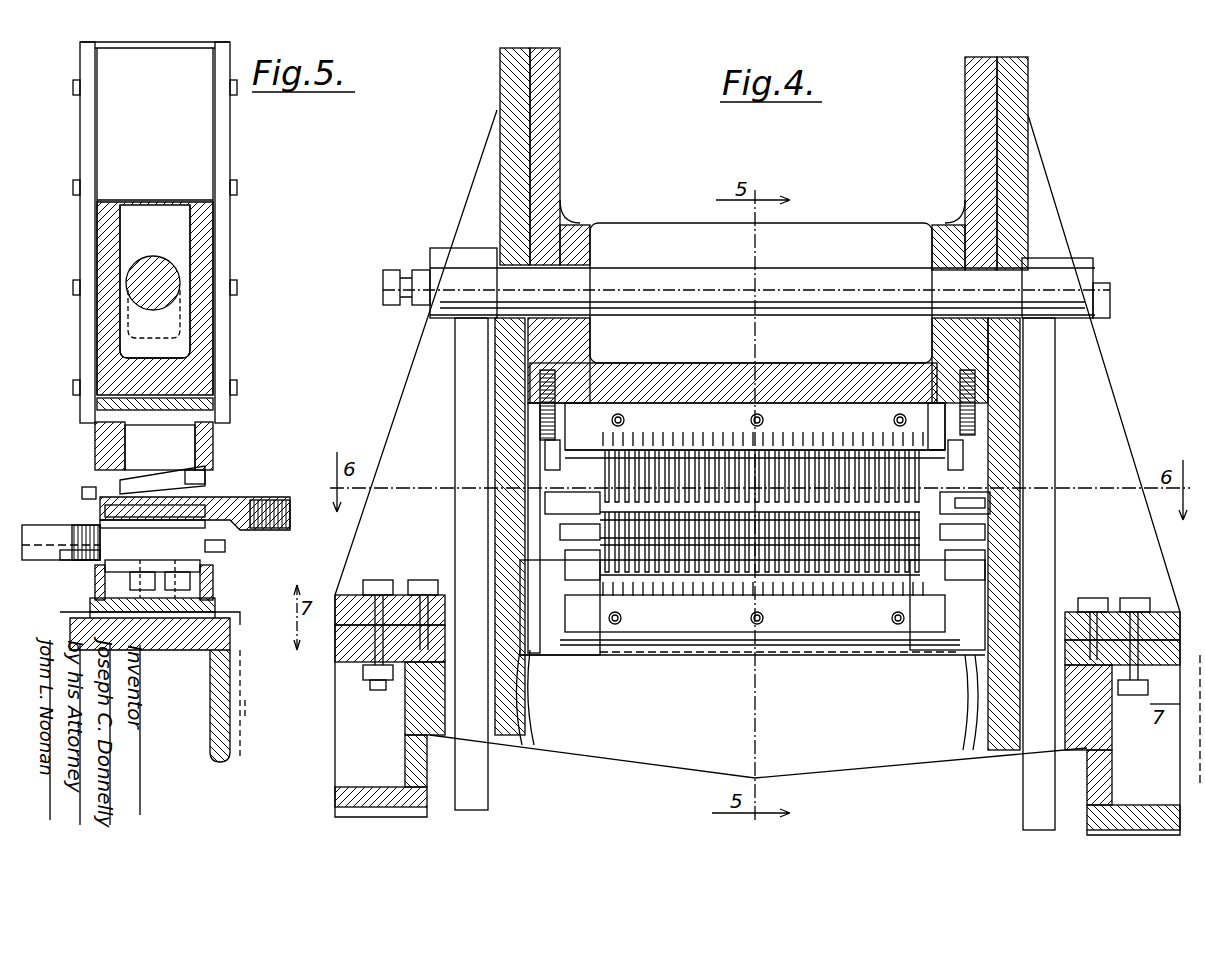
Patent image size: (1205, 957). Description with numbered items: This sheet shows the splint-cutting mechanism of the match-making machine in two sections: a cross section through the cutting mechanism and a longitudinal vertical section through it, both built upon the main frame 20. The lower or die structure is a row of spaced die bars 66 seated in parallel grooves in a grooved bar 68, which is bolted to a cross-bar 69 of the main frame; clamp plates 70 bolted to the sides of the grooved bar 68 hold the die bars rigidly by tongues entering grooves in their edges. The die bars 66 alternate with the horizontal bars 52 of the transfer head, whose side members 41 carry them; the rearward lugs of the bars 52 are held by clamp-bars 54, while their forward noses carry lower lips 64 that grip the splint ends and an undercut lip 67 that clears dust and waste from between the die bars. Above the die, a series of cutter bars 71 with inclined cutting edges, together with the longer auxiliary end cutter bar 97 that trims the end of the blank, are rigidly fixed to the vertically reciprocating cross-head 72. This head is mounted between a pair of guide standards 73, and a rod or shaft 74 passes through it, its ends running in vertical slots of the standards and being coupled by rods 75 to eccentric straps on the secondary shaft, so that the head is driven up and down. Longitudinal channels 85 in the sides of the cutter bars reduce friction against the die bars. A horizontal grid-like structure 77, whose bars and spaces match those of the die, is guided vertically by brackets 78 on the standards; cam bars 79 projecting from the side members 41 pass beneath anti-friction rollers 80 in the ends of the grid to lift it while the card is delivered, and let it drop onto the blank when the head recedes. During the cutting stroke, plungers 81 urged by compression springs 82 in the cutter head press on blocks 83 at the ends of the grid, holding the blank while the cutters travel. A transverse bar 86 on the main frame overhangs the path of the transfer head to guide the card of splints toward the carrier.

In FIG. 4, the main frame 20 is at (757, 707).
In FIG. 5, the main frame 20 is at (246, 700).
In FIG. 4, the side members 41 is at (565, 558).
In FIG. 5, the side members 41 is at (78, 560).
In FIG. 5, the horizontal bars 52 is at (61, 542).
In FIG. 4, the clamp-bars 54 is at (668, 580).
In FIG. 4, the lips 64 is at (742, 580).
In FIG. 4, the die bars 66 is at (572, 585).
In FIG. 5, the die bars 66 is at (285, 533).
In FIG. 4, the undercut lip 67 is at (822, 585).
In FIG. 5, the undercut lip 67 is at (152, 579).
In FIG. 5, the grooved bar 68 is at (200, 612).
In FIG. 4, the cross-bar 69 is at (840, 765).
In FIG. 5, the cross-bar 69 is at (245, 645).
In FIG. 4, the clamp plates 70 is at (712, 600).
In FIG. 5, the clamp plates 70 is at (95, 583).
In FIG. 4, the cutter bars 71 is at (782, 470).
In FIG. 5, the cutter bars 71 is at (64, 601).
In FIG. 4, the cross-head 72 is at (670, 224).
In FIG. 5, the cross-head 72 is at (263, 566).
In FIG. 4, the guide standards 73 is at (1144, 570).
In FIG. 5, the guide standards 73 is at (115, 42).
In FIG. 4, the rod or shaft 74 is at (620, 268).
In FIG. 5, the rod or shaft 74 is at (152, 258).
In FIG. 4, the rods 75 is at (560, 175).
In FIG. 4, the grid-like structure 77 is at (545, 503).
In FIG. 5, the grid-like structure 77 is at (118, 512).
In FIG. 4, the brackets 78 is at (527, 483).
In FIG. 5, the brackets 78 is at (88, 488).
In FIG. 4, the cam bars 79 is at (560, 548).
In FIG. 5, the cam bars 79 is at (105, 522).
In FIG. 4, the anti-friction rollers 80 is at (965, 500).
In FIG. 5, the anti-friction rollers 80 is at (205, 478).
In FIG. 4, the plungers 81 is at (751, 466).
In FIG. 4, the compression springs 82 is at (588, 352).
In FIG. 4, the blocks 83 is at (560, 530).
In FIG. 5, the blocks 83 is at (108, 470).
In FIG. 4, the longitudinal channels 85 is at (688, 460).
In FIG. 5, the longitudinal channels 85 is at (180, 478).
In FIG. 5, the transverse bar 86 is at (268, 497).
In FIG. 4, the auxiliary end cutter bar 97 is at (905, 480).
In FIG. 5, the auxiliary end cutter bar 97 is at (212, 455).